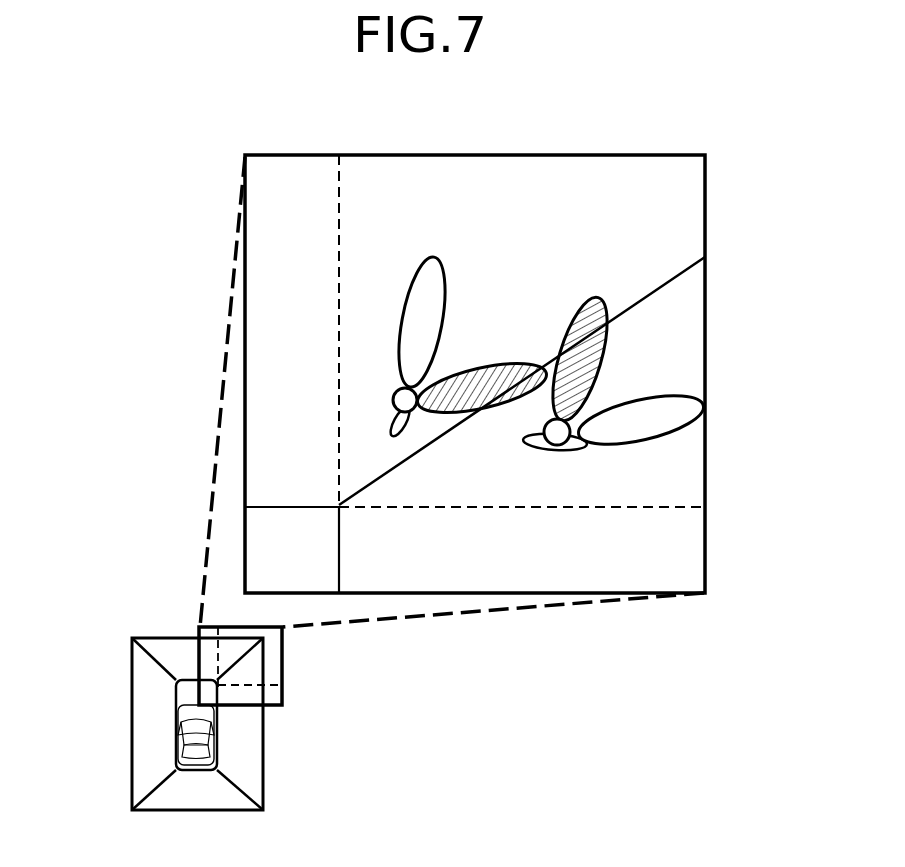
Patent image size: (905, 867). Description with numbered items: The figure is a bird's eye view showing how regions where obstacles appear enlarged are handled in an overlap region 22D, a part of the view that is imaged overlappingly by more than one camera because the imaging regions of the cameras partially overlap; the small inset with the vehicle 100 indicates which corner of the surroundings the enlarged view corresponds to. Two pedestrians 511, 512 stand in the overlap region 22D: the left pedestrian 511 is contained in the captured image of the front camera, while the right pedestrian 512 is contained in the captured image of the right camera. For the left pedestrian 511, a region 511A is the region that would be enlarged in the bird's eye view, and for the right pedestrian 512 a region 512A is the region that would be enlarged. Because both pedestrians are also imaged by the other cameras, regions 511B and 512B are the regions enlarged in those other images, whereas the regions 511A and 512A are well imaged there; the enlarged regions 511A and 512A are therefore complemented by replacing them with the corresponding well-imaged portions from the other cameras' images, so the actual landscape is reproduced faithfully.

The overlap region 22D is at (610, 188).
The vehicle 100 is at (196, 728).
The left pedestrian 511 is at (393, 392).
The region to be enlarged for the left pedestrian 511A is at (466, 372).
The region to be enlarged in other cameras' images for the left pedestrian 511B is at (436, 257).
The right pedestrian 512 is at (524, 443).
The region to be enlarged for the right pedestrian 512A is at (596, 297).
The region to be enlarged in other cameras' images for the right pedestrian 512B is at (630, 401).